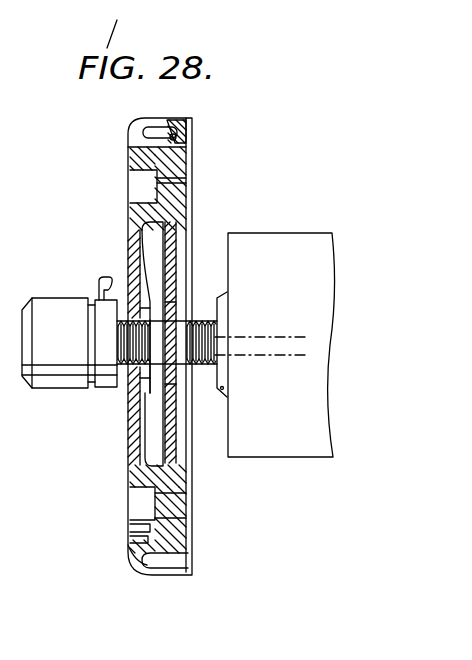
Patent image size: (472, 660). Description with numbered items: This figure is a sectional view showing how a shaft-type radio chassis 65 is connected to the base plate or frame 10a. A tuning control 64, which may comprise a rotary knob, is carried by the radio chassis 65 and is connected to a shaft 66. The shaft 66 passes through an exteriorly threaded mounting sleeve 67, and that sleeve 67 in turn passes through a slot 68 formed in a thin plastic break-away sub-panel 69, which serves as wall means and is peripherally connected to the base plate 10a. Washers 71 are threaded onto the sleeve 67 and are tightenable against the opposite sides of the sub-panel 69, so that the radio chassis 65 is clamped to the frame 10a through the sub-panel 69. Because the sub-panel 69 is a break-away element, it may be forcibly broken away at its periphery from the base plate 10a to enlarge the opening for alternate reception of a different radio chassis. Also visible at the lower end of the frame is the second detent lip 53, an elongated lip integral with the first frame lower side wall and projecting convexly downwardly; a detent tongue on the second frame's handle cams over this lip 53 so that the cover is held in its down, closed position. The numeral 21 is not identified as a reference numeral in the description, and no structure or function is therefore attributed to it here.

The base plate or frame 10a is at (203, 148).
The washers 71 is at (133, 252).
The break-away sub-panel 69 is at (160, 433).
The spacer block 21 is at (135, 503).
The second detent lip 53 is at (146, 562).
The tuning control 64 is at (53, 313).
The shaft-type radio chassis 65 is at (292, 448).
The shaft 66 is at (266, 335).
The slot 68 is at (228, 353).
The mounting sleeve 67 is at (200, 368).